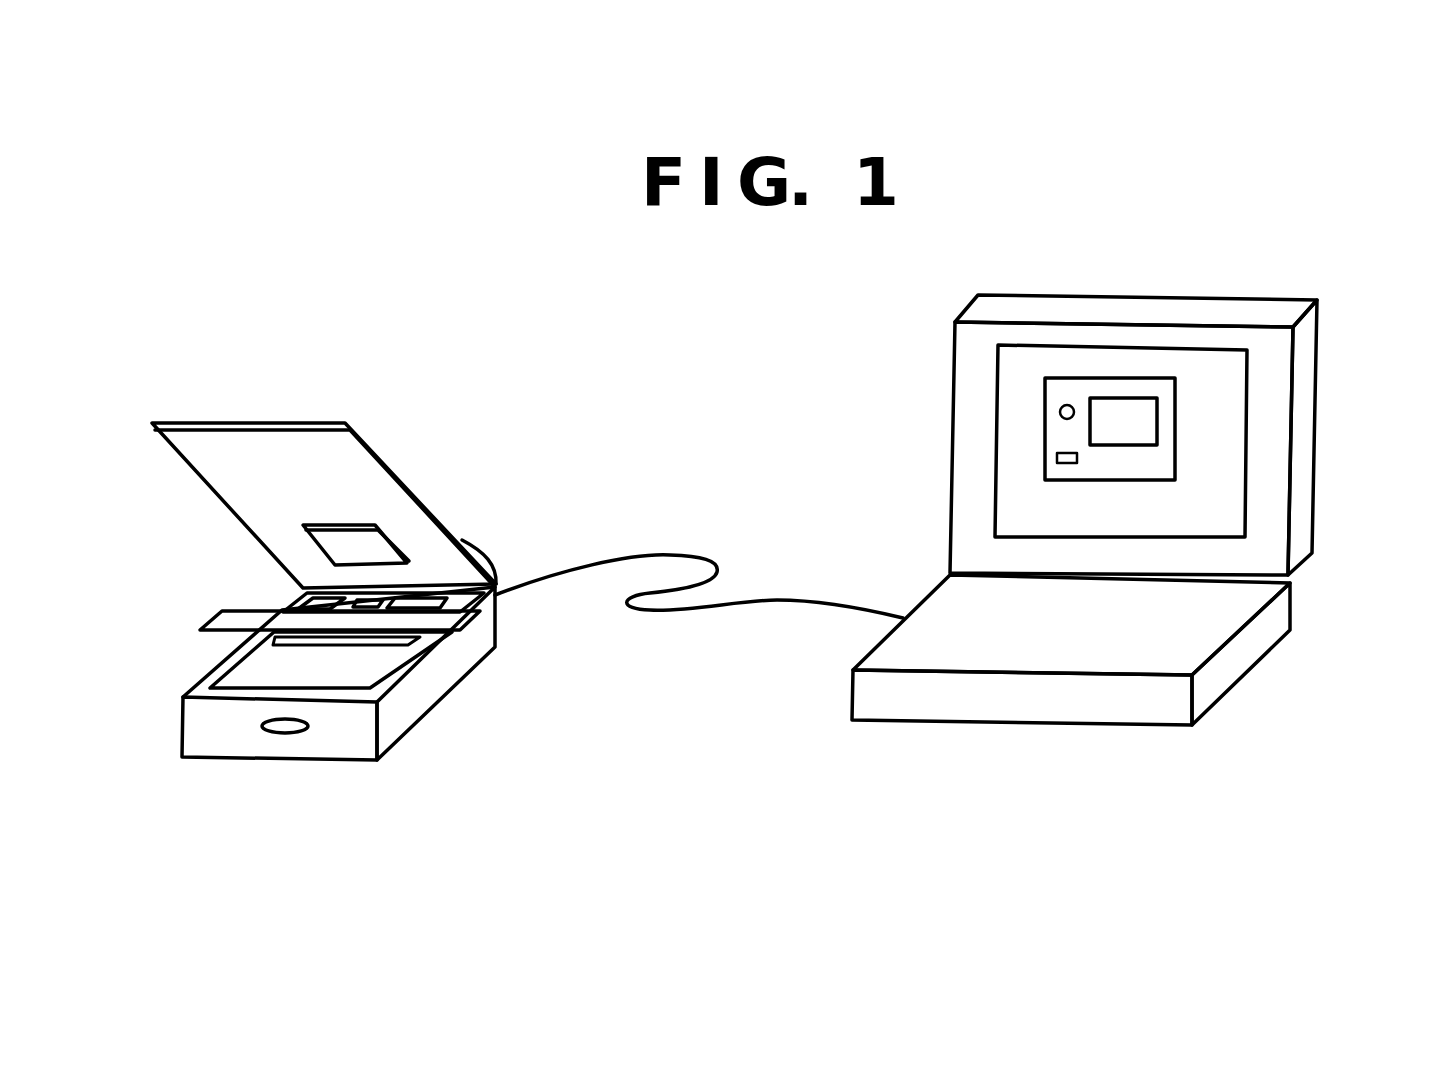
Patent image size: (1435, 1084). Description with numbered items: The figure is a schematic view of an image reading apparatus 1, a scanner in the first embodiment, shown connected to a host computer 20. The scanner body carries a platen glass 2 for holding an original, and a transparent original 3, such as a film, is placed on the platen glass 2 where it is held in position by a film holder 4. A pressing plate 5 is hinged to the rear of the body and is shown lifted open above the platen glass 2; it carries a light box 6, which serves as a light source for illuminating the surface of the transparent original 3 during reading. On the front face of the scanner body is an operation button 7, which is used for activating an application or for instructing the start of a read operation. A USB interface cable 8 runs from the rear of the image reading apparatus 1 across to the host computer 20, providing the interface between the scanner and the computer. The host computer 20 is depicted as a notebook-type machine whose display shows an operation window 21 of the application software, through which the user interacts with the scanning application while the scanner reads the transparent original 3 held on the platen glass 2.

The image reading apparatus 1 is at (192, 338).
The platen glass 2 is at (237, 675).
The transparent original 3 is at (253, 612).
The film holder 4 is at (373, 645).
The pressing plate 5 is at (247, 421).
The light box 6 is at (353, 533).
The operation button 7 is at (273, 733).
The USB interface cable 8 is at (663, 553).
The host computer 20 is at (1342, 268).
The operation window 21 is at (1175, 442).